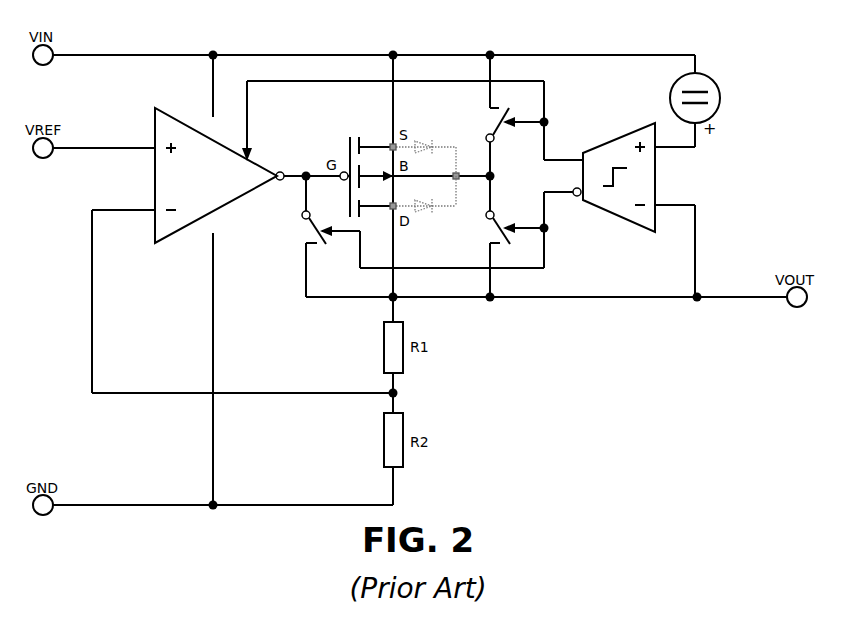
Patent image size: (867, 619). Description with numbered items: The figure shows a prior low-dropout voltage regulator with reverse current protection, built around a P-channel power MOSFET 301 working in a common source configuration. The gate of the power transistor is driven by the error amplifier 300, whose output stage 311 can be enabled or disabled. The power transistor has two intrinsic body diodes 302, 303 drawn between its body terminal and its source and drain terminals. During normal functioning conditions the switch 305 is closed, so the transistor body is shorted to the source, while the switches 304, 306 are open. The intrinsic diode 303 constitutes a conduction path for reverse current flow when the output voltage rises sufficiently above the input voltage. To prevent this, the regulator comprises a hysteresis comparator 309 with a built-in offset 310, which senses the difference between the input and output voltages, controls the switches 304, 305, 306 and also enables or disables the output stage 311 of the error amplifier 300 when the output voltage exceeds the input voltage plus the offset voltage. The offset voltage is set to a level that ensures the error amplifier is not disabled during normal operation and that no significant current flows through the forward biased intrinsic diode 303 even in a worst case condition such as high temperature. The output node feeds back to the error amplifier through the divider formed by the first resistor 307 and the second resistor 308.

The error amplifier 300 is at (214, 156).
The P-channel power MOSFET 301 is at (400, 173).
The intrinsic body diode 302 is at (424, 146).
The intrinsic body diode 303 is at (423, 208).
The switch 304 is at (313, 227).
The switch 305 is at (500, 125).
The switch 306 is at (500, 227).
The resistor R1 307 is at (377, 367).
The resistor R2 308 is at (377, 459).
The hysteresis comparator 309 is at (614, 179).
The built-in offset 310 is at (725, 98).
The output stage 311 is at (393, 121).